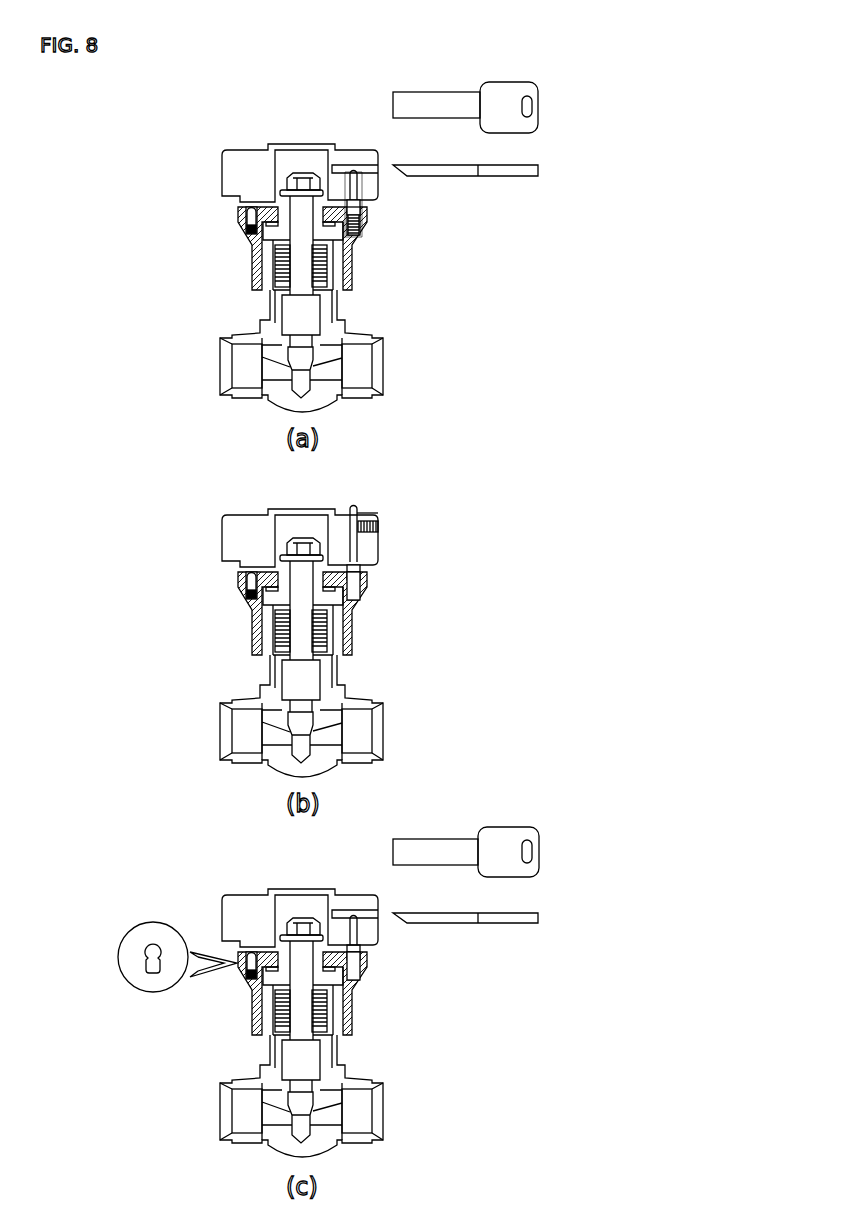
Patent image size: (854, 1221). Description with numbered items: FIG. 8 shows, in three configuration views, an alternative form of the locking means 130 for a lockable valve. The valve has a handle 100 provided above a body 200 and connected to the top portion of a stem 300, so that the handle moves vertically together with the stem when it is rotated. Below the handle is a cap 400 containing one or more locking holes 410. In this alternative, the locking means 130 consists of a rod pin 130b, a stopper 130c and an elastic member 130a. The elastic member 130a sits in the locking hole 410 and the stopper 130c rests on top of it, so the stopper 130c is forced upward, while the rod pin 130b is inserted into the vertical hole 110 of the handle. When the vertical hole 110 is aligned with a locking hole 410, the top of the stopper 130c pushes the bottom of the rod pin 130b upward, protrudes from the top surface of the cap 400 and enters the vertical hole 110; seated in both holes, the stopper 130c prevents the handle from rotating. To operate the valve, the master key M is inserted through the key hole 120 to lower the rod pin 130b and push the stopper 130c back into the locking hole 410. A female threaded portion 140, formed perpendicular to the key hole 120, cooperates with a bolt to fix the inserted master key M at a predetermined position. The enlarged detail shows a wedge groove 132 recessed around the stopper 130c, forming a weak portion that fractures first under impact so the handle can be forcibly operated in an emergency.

The handle 100 is at (253, 165).
The vertical hole 110 is at (365, 180).
The key hole 120 is at (335, 170).
The locking means 130 is at (505, 250).
The elastic member 130a is at (355, 225).
The rod pin 130b is at (356, 188).
The stopper 130c is at (357, 210).
The wedge groove 132 is at (142, 952).
The female threaded portion 140 is at (380, 521).
The body 200 is at (325, 692).
The stem 300 is at (298, 260).
The cap 400 is at (257, 275).
The locking hole 410 is at (238, 212).
The master key M is at (351, 504).